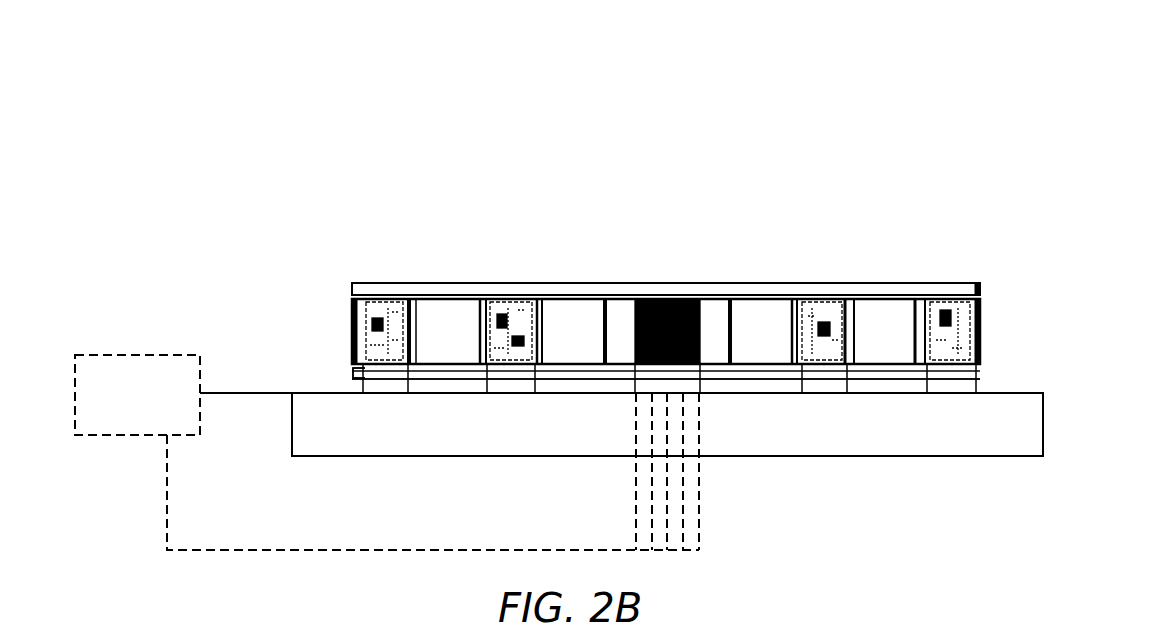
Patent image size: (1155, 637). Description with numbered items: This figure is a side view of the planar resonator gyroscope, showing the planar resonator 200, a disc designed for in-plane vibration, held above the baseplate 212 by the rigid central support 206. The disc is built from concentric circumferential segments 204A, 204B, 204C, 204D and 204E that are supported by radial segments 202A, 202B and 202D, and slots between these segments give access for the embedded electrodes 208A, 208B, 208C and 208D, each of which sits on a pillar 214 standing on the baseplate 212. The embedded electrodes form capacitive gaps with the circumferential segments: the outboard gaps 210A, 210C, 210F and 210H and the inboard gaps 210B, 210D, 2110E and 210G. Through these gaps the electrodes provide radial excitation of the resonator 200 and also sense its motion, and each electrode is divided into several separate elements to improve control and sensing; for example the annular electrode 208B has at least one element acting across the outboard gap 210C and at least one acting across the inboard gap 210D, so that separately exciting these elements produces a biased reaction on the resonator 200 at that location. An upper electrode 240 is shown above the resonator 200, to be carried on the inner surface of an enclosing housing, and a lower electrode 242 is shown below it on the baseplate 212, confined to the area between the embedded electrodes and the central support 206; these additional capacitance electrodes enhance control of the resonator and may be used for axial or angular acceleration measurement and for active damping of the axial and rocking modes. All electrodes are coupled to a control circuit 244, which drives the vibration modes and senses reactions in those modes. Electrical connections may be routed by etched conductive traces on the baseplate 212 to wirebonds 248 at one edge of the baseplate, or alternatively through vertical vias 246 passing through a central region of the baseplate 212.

The planar resonator 200 is at (1036, 96).
The rigid central support 206 is at (672, 295).
The radial segment 202A is at (718, 295).
The circumferential segment 204A is at (733, 295).
The radial segment 202B is at (757, 295).
The circumferential segment 204B is at (790, 295).
The upper electrode 240 is at (600, 299).
The inboard gap 210D is at (534, 299).
The inboard gap 210B is at (404, 299).
The annular electrode 208B is at (507, 299).
The embedded electrode 208A is at (385, 299).
The outboard gap 210C is at (484, 299).
The outboard gap 210A is at (356, 287).
The contact 2110E is at (812, 295).
The embedded electrode 208C is at (840, 295).
The outboard gap 210F is at (862, 295).
The circumferential segment 204C is at (883, 295).
The radial segment 202D is at (902, 295).
The circumferential segment 204D is at (922, 295).
The inboard gap 210G is at (935, 295).
The embedded electrode 208D is at (957, 288).
The outboard gap 210H is at (980, 285).
The circumferential segment 204E is at (983, 328).
The lower electrode 242 is at (352, 372).
The pillar 214 is at (356, 380).
The baseplate 212 is at (1043, 423).
The control circuit 244 is at (134, 436).
The vertical vias 246 is at (720, 440).
The wirebonds 248 is at (270, 410).